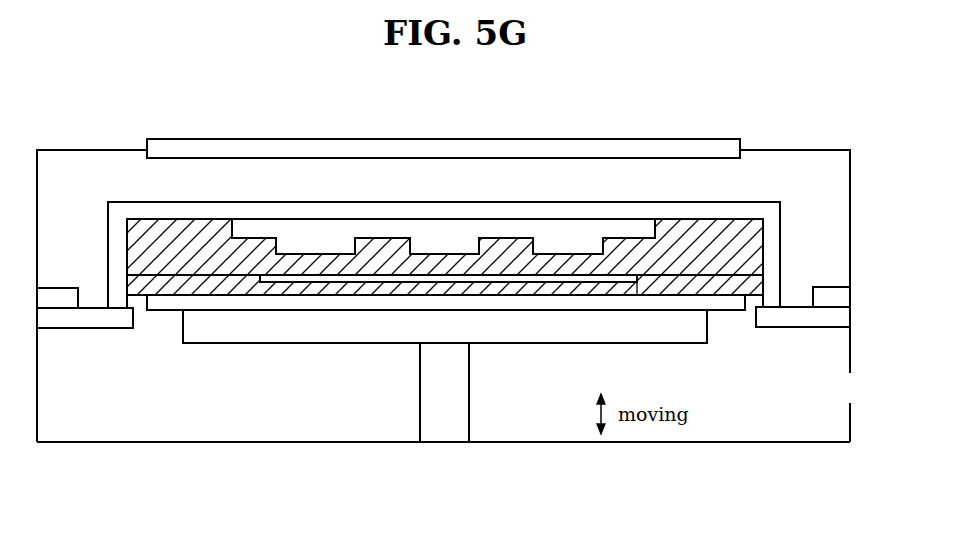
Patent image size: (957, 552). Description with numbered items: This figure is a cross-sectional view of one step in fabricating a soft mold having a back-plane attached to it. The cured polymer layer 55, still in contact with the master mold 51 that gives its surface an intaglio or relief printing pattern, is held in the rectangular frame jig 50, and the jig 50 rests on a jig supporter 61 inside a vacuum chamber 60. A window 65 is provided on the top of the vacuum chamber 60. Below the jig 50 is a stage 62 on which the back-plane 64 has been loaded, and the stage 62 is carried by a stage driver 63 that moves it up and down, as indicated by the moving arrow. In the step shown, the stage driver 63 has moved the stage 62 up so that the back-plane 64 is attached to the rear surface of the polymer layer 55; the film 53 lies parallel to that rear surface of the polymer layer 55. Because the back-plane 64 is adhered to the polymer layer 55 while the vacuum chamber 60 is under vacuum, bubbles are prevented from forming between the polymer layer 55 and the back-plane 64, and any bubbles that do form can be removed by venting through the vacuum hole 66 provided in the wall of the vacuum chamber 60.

The jig 50 is at (750, 210).
The master mold 51 is at (558, 228).
The film 53 is at (350, 290).
The polymer layer 55 is at (216, 272).
The vacuum chamber 60 is at (138, 443).
The jig supporter 61 is at (792, 318).
The stage 62 is at (682, 318).
The stage driver 63 is at (462, 419).
The back-plane 64 is at (555, 283).
The window 65 is at (703, 147).
The vacuum hole 66 is at (852, 387).